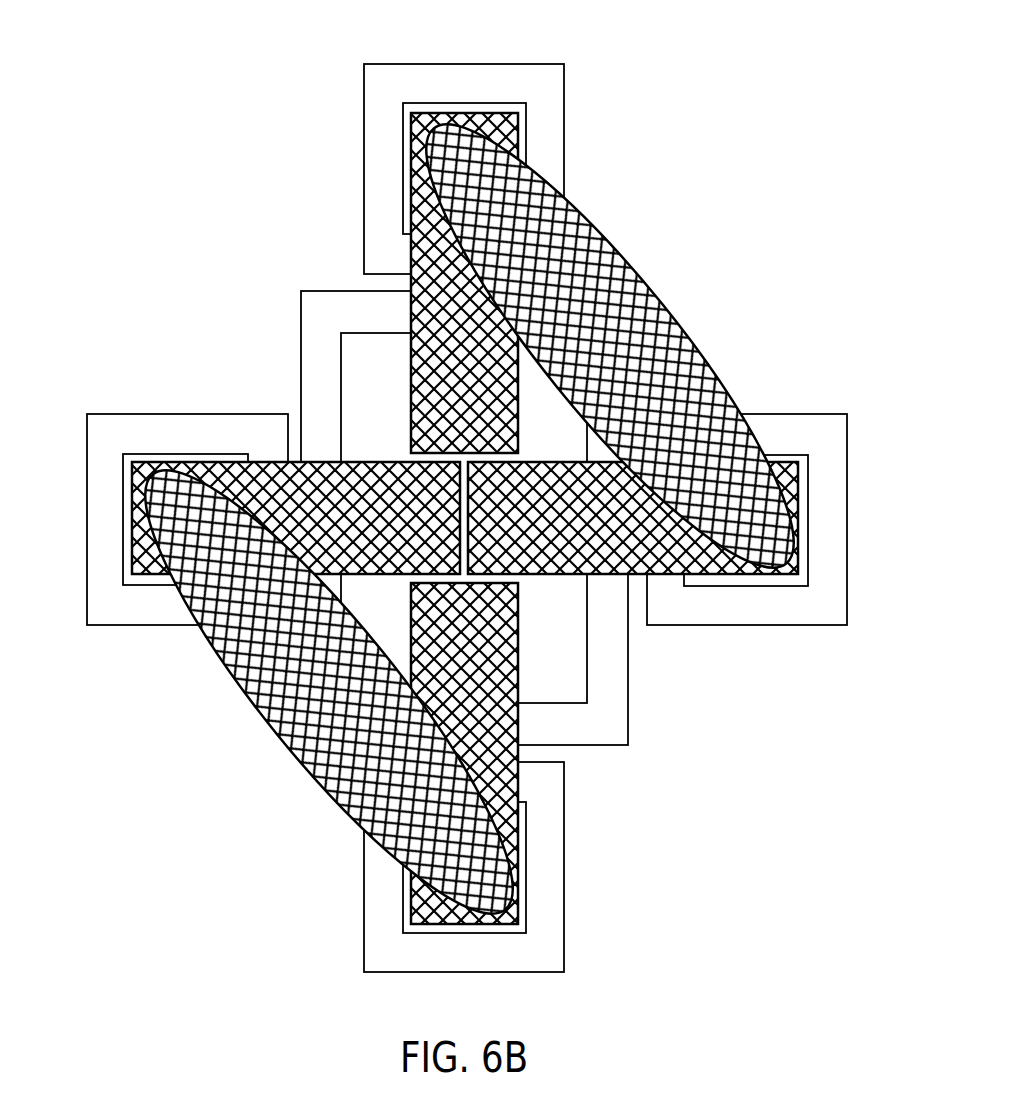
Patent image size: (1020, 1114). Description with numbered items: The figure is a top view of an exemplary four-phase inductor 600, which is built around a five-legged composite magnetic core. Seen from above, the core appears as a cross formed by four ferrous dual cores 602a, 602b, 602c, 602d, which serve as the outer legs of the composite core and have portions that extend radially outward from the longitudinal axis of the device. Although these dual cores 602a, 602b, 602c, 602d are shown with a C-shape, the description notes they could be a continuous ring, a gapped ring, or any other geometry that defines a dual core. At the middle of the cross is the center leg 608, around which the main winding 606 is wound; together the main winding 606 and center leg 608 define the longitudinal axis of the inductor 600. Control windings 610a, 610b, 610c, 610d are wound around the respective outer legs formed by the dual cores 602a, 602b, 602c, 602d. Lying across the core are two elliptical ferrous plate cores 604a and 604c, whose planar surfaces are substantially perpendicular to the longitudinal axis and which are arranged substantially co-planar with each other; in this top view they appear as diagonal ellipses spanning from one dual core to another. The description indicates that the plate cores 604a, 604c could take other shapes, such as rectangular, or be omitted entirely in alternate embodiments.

The four-phase inductor 600 is at (797, 108).
The ferrous dual core 602a is at (510, 120).
The ferrous dual core 602b is at (551, 563).
The ferrous dual core 602c is at (455, 917).
The ferrous dual core 602d is at (138, 467).
The ferrous plate core 604a is at (643, 303).
The ferrous plate core 604c is at (243, 685).
The main winding 606 is at (613, 695).
The center leg 608 is at (375, 368).
The control winding 610a is at (547, 137).
The control winding 610b is at (830, 530).
The control winding 610c is at (553, 895).
The control winding 610d is at (103, 485).